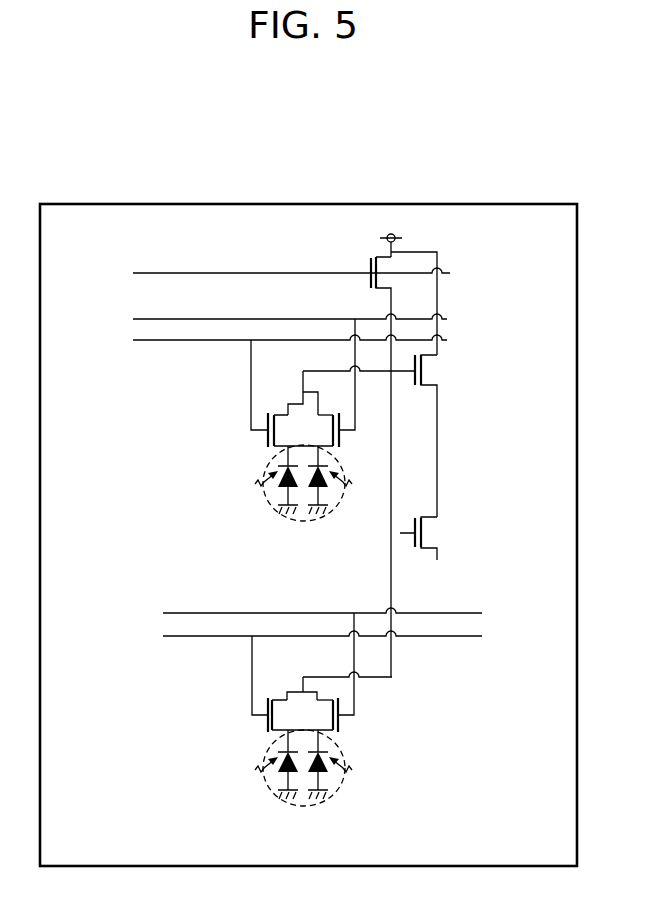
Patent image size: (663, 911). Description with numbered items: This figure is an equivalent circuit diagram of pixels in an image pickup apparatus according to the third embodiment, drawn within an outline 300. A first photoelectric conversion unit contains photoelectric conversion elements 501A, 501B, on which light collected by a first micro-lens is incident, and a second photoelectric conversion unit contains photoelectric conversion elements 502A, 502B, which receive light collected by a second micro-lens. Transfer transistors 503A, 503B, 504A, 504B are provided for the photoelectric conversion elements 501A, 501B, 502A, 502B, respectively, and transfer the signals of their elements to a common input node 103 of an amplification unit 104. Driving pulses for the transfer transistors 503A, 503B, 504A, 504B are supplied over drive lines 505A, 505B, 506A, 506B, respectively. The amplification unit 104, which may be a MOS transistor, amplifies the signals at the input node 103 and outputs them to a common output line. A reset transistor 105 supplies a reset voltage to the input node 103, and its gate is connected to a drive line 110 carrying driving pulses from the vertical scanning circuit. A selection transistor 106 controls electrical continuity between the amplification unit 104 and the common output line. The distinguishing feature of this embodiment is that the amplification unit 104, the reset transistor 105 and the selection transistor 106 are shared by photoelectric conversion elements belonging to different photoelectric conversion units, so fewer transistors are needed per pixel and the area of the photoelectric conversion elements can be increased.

The pixel 300 is at (282, 203).
The drive line 110 is at (258, 272).
The reset transistor 105 is at (387, 265).
The drive line 505A is at (232, 340).
The drive line 505B is at (372, 319).
The input node 103 is at (340, 371).
The amplification unit 104 is at (425, 365).
The selection transistor 106 is at (425, 530).
The transfer transistor 503A is at (266, 422).
The transfer transistor 503B is at (342, 420).
The photoelectric conversion element 501A is at (284, 498).
The photoelectric conversion element 501B is at (323, 498).
The drive line 506A is at (258, 636).
The drive line 506B is at (363, 613).
The transfer transistor 504A is at (268, 708).
The transfer transistor 504B is at (340, 707).
The photoelectric conversion element 502A is at (282, 780).
The photoelectric conversion element 502B is at (325, 780).